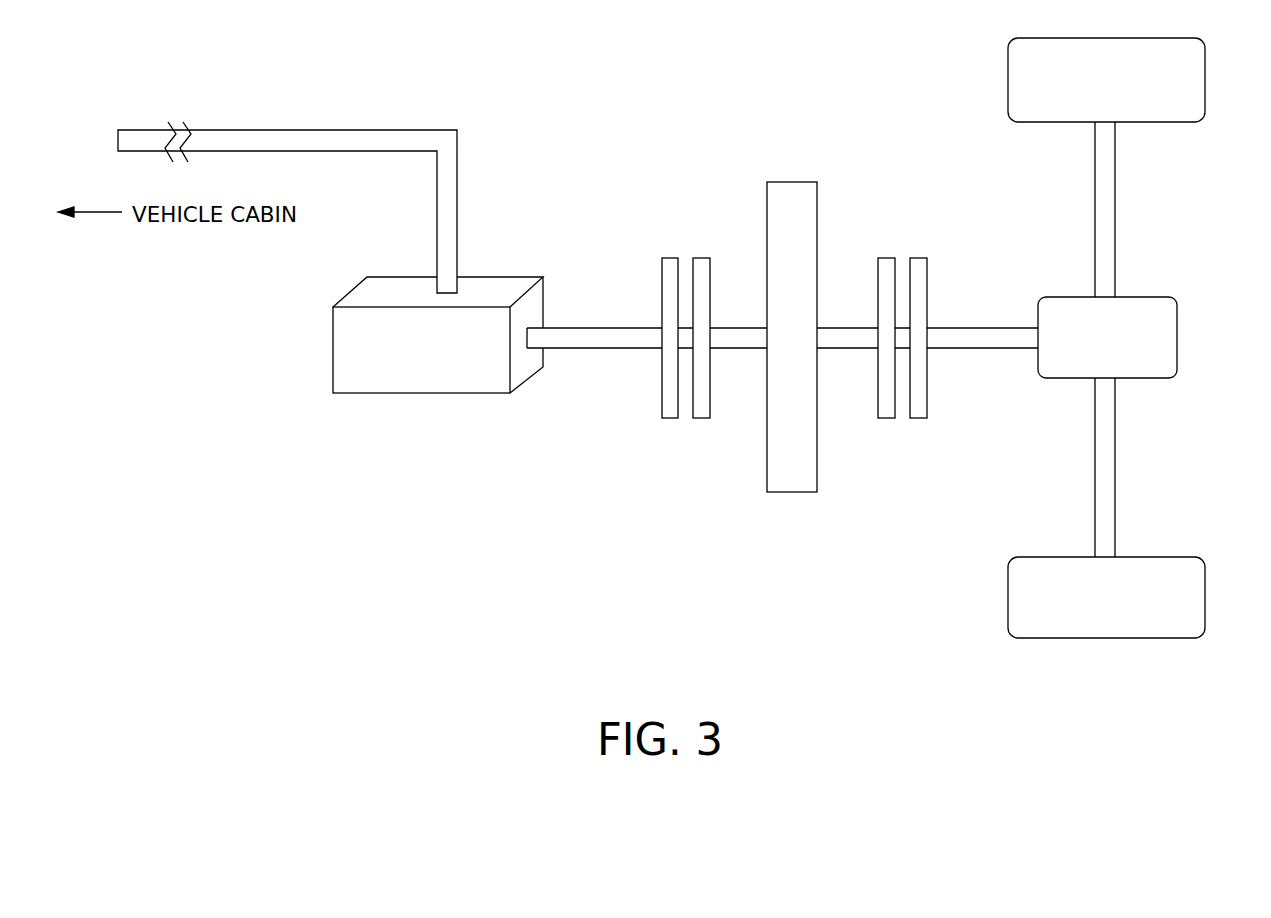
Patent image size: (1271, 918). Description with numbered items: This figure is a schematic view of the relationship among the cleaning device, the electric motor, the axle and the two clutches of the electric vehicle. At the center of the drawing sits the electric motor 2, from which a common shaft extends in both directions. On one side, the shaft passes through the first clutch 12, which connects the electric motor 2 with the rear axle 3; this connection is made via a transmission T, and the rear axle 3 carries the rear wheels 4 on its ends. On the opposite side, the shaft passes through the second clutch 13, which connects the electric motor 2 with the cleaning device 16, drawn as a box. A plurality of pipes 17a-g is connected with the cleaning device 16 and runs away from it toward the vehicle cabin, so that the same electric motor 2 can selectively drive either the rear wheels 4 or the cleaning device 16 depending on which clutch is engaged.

The pipes 17a-g is at (327, 130).
The cleaning device 16 is at (478, 385).
The second clutch 13 is at (702, 413).
The electric motor 2 is at (802, 483).
The first clutch 12 is at (918, 413).
The transmission T is at (1142, 370).
The rear axle 3 is at (1110, 498).
The rear wheels 4 is at (1200, 592).